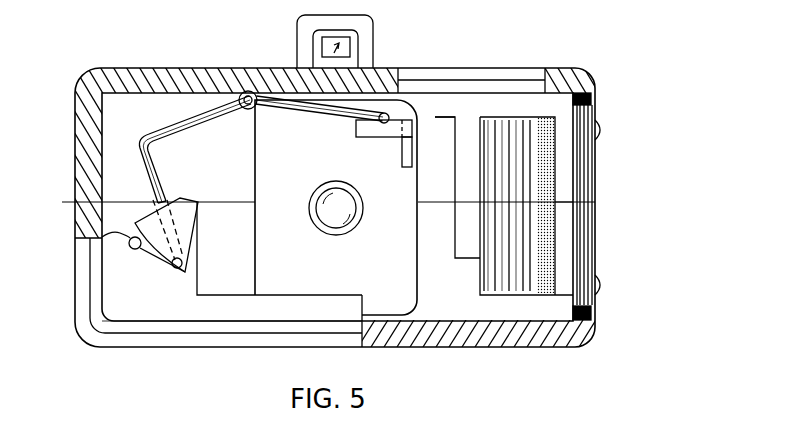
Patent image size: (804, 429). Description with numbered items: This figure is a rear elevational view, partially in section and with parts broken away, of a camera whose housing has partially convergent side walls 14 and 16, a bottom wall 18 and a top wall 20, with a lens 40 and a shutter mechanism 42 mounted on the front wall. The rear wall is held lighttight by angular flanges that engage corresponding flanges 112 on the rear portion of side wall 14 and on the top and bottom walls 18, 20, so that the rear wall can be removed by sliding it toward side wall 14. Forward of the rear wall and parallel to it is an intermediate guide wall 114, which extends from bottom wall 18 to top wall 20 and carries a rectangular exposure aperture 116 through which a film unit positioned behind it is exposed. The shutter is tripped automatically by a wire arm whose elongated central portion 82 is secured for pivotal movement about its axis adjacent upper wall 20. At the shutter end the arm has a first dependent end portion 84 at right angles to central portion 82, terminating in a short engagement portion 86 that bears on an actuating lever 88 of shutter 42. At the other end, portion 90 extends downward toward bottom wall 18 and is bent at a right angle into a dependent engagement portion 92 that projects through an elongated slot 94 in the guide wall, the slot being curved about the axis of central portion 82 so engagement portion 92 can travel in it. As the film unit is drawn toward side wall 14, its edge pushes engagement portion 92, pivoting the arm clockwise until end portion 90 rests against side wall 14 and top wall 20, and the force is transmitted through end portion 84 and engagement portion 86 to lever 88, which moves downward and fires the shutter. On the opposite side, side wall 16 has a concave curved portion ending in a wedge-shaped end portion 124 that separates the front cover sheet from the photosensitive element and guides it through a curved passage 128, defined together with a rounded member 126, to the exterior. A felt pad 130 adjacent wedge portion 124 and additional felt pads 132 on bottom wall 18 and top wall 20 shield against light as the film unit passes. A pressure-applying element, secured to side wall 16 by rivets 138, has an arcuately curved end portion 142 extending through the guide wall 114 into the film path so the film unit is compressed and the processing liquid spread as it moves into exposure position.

The side wall 14 is at (102, 135).
The side wall 16 is at (447, 303).
The bottom wall 18 is at (383, 340).
The top wall 20 is at (148, 68).
The lens 40 is at (330, 192).
The shutter 42 is at (321, 263).
The central portion 82 is at (247, 91).
The first dependent end portion 84 is at (286, 110).
The engagement portion 86 is at (435, 117).
The actuating lever 88 is at (356, 130).
The end portion 90 is at (145, 140).
The engagement portion 92 is at (185, 263).
The slot 94 is at (142, 253).
The flanges 112 is at (130, 328).
The intermediate guide wall 114 is at (470, 100).
The exposure aperture 116 is at (432, 150).
The wedge-shaped end portion 124 is at (565, 213).
The member 126 is at (590, 178).
The curved passage 128 is at (583, 160).
The felt pad 130 is at (553, 238).
The felt pads 132 is at (597, 96).
The rivets 138 is at (600, 130).
The arcuately curved end portion 142 is at (502, 278).